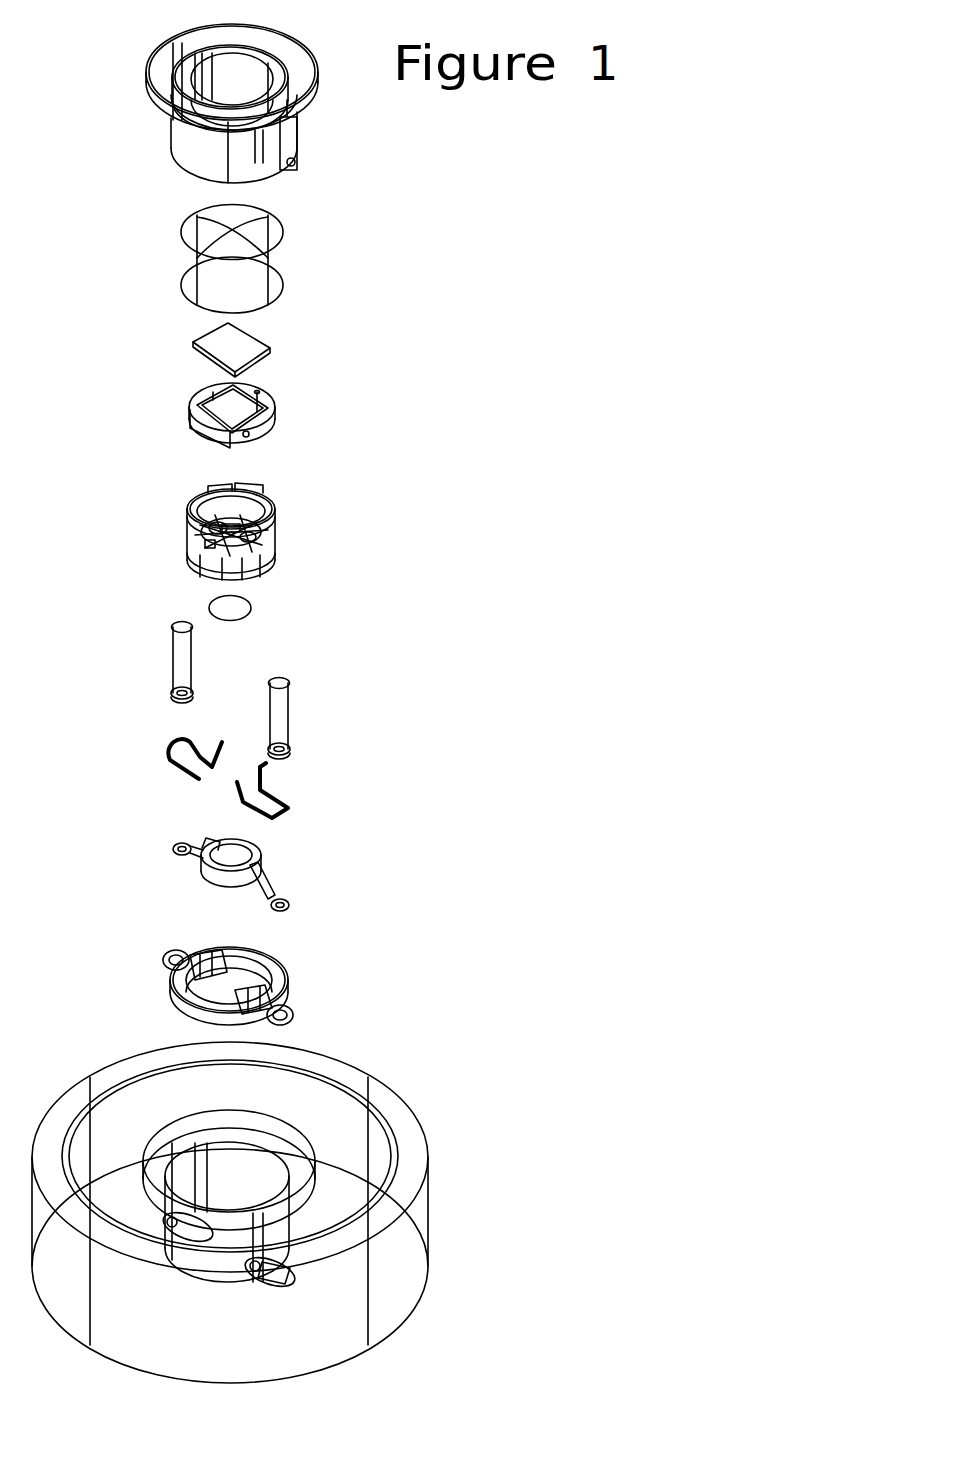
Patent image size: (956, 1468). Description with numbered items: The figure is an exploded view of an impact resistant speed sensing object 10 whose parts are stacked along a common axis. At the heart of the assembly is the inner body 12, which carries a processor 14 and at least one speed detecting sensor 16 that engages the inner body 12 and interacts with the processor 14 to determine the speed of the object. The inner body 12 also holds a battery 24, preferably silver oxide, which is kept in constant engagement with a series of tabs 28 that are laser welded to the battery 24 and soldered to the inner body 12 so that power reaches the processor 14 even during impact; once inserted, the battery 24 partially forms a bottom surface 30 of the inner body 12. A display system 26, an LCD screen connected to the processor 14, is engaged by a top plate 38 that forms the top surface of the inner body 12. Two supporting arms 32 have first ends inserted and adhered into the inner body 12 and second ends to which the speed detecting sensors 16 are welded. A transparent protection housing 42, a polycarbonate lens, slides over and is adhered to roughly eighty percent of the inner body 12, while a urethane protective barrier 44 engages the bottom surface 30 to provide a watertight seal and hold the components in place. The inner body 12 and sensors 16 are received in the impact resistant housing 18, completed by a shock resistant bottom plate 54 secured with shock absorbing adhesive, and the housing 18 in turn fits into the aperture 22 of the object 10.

The impact resistant speed sensing object 10 is at (508, 677).
The inner body 12 is at (178, 530).
The processor 14 is at (252, 615).
The speed detecting sensor 16 is at (168, 665).
The impact resistant housing 18 is at (310, 137).
The aperture 22 is at (428, 1147).
The battery 24 is at (257, 855).
The display system 26 is at (280, 353).
The tabs 28 is at (175, 845).
The bottom surface 30 is at (225, 887).
The supporting arm 32 is at (297, 807).
The top plate 38 is at (278, 417).
The transparent protection housing 42 is at (290, 273).
The protective barrier 44 is at (284, 978).
The shock resistant bottom plate 54 is at (285, 995).